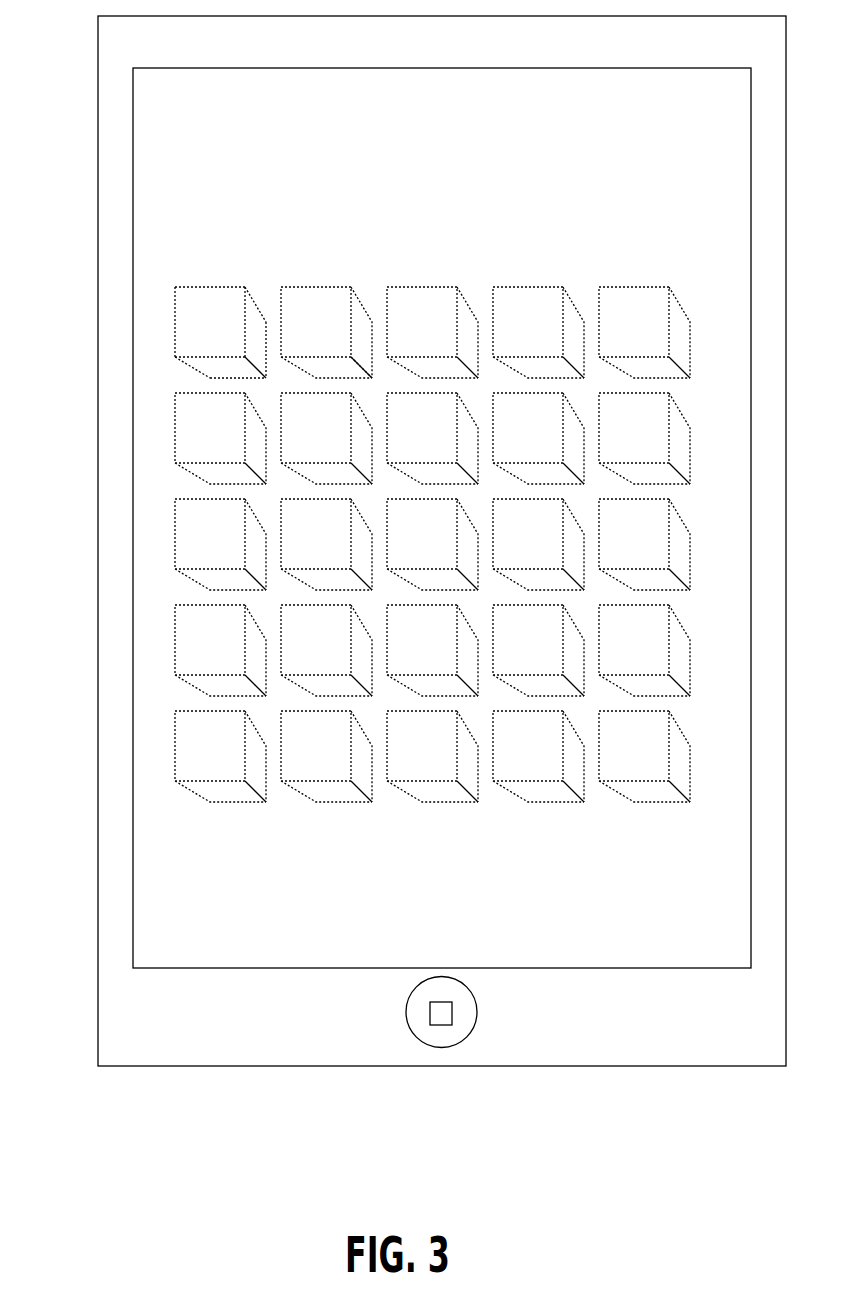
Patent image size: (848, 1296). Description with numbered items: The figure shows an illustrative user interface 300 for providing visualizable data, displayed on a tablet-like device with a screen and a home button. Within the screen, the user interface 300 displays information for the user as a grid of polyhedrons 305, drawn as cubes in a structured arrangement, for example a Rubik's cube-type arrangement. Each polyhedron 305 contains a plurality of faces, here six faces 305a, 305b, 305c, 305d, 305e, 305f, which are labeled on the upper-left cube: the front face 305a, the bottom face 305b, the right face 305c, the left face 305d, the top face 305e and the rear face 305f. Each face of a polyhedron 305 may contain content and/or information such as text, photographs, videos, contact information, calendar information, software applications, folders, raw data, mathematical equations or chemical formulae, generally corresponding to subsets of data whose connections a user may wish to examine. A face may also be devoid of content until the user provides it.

The user interface 300 is at (107, 661).
The polyhedron 305 is at (520, 298).
The face 305a is at (191, 299).
The face 305b is at (193, 363).
The face 305c is at (253, 312).
The face 305d is at (153, 323).
The face 305e is at (187, 273).
The face 305f is at (262, 384).